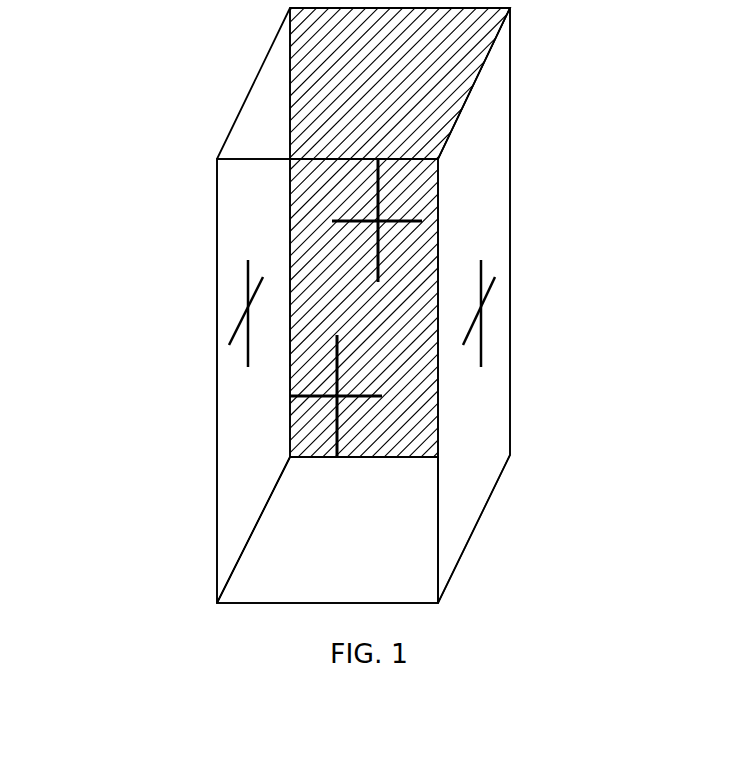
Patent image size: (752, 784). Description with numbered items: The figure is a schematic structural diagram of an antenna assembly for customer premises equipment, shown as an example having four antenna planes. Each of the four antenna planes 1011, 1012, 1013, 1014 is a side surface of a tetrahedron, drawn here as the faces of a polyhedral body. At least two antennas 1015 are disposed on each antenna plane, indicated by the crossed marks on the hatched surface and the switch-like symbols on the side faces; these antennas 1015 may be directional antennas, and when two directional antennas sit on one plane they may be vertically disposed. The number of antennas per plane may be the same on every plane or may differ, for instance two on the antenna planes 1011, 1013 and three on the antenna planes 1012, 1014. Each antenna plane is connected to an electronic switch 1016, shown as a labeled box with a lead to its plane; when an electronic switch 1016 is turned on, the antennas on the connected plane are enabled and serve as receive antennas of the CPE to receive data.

The antenna plane 1011 is at (474, 305).
The antenna plane 1012 is at (400, 83).
The antenna plane 1013 is at (253, 381).
The antenna plane 1014 is at (554, 490).
The antennas 1015 is at (481, 351).
The electronic switch 1016 is at (452, 83).